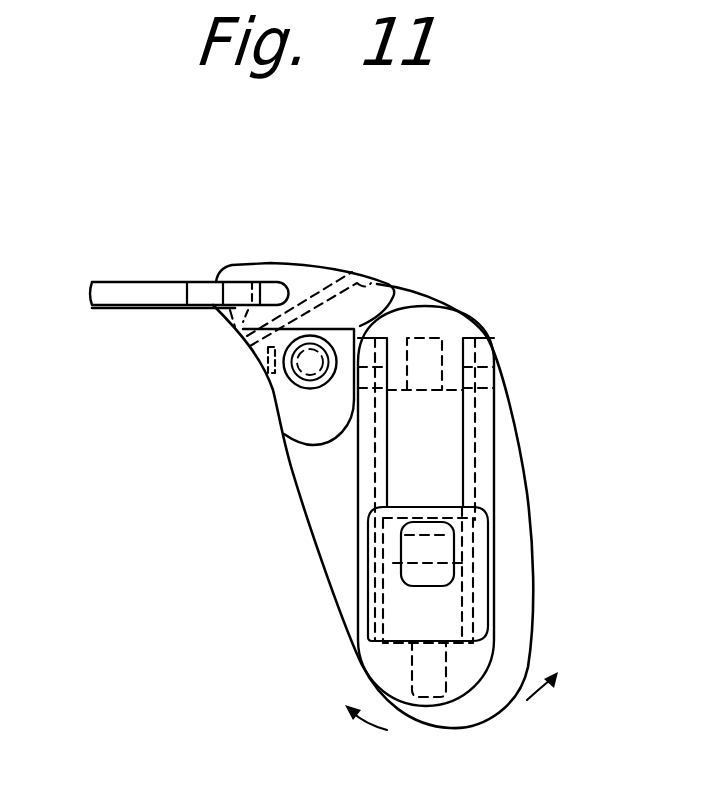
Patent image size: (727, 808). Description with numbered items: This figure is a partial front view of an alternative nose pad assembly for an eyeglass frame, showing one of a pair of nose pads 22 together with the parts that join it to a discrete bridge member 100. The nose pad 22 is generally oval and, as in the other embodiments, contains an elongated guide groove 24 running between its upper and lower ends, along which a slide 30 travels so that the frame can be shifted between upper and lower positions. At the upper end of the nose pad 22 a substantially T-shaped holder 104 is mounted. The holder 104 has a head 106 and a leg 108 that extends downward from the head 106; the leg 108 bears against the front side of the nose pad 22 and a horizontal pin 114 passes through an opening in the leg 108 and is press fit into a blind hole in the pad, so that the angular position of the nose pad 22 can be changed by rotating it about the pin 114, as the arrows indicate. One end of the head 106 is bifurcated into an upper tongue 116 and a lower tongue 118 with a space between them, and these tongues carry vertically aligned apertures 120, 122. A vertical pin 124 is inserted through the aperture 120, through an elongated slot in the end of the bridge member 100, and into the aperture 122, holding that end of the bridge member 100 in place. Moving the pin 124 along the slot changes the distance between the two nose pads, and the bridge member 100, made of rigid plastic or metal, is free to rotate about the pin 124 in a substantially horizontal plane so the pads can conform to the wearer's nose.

The nose pad 22 is at (520, 512).
The guide groove 24 is at (462, 433).
The slide 30 is at (483, 578).
The bridge member 100 is at (120, 282).
The holder 104 is at (372, 287).
The head 106 is at (300, 277).
The leg 108 is at (320, 426).
The horizontal pin 114 is at (310, 363).
The upper tongue 116 is at (217, 281).
The lower tongue 118 is at (213, 311).
The aperture 120 is at (230, 270).
The aperture 122 is at (233, 310).
The vertical pin 124 is at (227, 268).